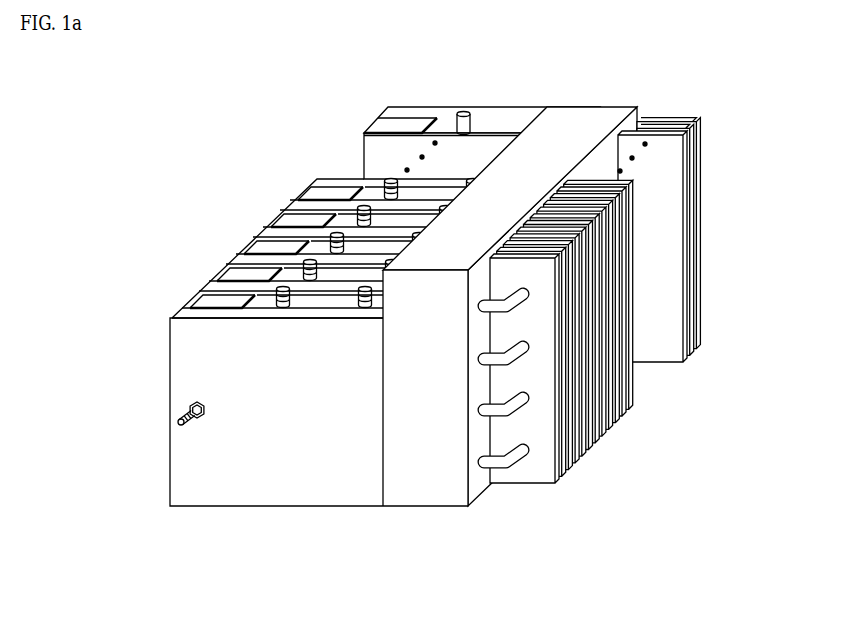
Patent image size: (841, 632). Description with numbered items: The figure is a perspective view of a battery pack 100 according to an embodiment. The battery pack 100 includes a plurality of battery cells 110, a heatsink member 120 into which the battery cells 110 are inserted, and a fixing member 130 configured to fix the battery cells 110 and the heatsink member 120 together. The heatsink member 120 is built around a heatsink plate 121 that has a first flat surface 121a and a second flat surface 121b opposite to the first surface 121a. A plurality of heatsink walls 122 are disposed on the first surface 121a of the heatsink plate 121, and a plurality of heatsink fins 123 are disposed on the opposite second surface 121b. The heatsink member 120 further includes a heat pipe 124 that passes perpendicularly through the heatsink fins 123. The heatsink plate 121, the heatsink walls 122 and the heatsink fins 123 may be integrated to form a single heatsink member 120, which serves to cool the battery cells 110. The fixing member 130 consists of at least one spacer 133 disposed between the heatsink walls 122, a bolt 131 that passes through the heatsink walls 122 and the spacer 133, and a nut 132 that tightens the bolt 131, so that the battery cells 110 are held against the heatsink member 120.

The battery pack 100 is at (186, 105).
The battery cells 110 is at (272, 302).
The heatsink member 120 is at (435, 360).
The heatsink plate 121 is at (478, 338).
The first flat surface 121a is at (383, 482).
The second flat surface 121b is at (487, 484).
The heatsink walls 122 is at (276, 443).
The heatsink fins 123 is at (542, 478).
The heat pipe 124 is at (497, 465).
The fixing member 130 is at (146, 366).
The bolt 131 is at (147, 424).
The nut 132 is at (193, 401).
The spacer 133 is at (198, 297).